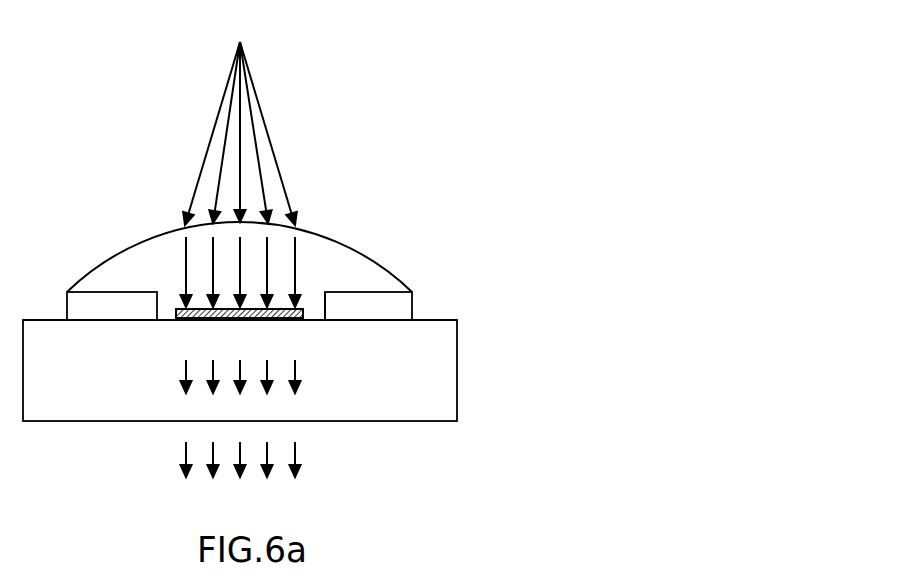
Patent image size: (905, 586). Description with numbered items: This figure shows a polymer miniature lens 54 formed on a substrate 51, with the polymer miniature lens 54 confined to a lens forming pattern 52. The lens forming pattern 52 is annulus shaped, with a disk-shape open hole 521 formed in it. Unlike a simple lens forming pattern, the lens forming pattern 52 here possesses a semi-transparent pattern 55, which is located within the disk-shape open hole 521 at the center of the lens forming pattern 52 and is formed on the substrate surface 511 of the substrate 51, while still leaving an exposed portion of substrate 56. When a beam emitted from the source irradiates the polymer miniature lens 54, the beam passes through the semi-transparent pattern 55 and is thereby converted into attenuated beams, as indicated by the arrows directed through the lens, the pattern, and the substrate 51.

The substrate 51 is at (430, 396).
The substrate surface 511 is at (438, 318).
The lens forming pattern 52 is at (385, 308).
The disk-shape open hole 521 is at (307, 303).
The polymer miniature lens 54 is at (323, 258).
The semi-transparent pattern 55 is at (177, 311).
The exposed portion of substrate 56 is at (173, 319).